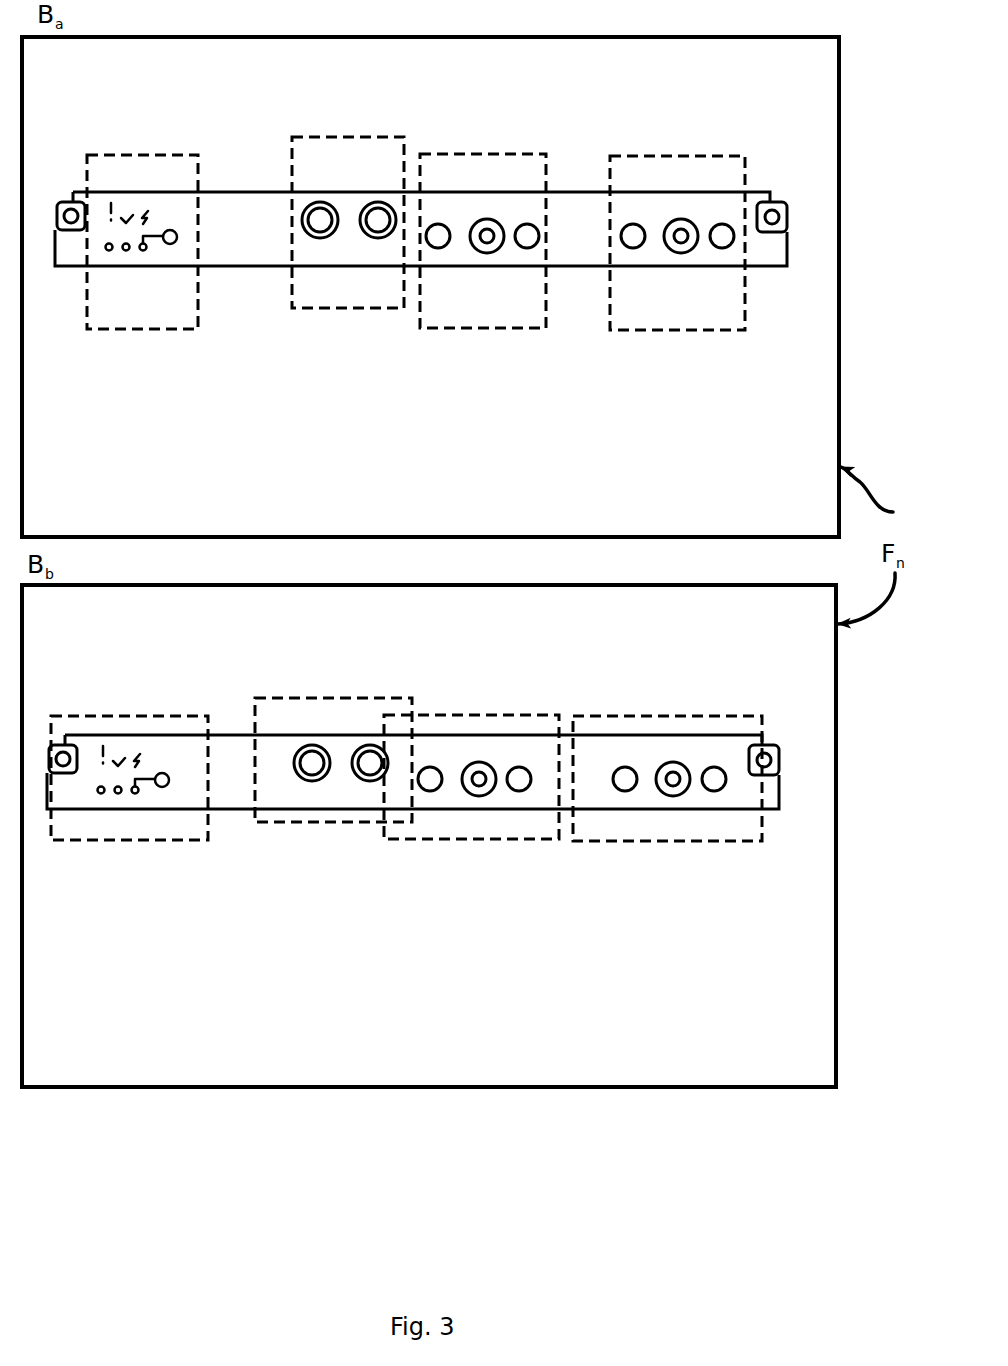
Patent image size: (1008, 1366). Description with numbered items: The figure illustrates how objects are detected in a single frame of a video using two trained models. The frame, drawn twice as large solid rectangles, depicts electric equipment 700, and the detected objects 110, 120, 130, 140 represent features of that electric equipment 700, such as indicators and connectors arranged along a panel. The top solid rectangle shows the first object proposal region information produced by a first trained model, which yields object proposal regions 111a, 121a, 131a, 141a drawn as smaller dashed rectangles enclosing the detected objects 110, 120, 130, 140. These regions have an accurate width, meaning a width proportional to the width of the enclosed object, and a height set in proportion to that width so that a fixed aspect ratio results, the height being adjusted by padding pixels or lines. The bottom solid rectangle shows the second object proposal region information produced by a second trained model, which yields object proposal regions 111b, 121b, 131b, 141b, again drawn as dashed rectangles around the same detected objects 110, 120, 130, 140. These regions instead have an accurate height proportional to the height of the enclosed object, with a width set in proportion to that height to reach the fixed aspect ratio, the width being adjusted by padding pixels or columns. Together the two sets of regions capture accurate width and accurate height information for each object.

The electric equipment 700 is at (262, 150).
The detected object 110 is at (127, 252).
The object proposal region 111a is at (193, 336).
The object proposal region 111b is at (184, 843).
The detected object 120 is at (320, 244).
The object proposal region 121a is at (347, 312).
The object proposal region 121b is at (335, 826).
The detected object 130 is at (485, 214).
The object proposal region 131a is at (548, 189).
The object proposal region 131b is at (560, 733).
The detected object 140 is at (682, 255).
The object proposal region 141a is at (608, 324).
The object proposal region 141b is at (615, 844).